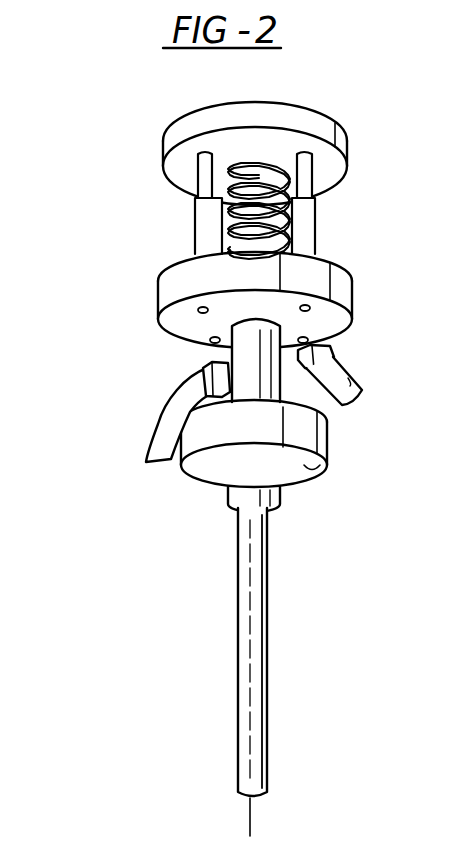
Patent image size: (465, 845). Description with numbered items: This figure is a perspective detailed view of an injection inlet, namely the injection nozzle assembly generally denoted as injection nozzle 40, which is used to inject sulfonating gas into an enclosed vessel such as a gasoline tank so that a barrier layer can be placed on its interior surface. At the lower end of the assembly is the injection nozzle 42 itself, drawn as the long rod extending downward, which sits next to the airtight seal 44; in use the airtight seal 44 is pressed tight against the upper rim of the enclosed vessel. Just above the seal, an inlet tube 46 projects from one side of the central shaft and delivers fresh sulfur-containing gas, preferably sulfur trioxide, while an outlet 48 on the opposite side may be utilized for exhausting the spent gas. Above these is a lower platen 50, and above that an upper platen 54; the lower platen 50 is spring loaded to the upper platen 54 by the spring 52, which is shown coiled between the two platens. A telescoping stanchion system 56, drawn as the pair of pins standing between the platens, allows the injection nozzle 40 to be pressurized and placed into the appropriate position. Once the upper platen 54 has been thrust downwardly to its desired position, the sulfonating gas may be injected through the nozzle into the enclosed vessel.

The injection nozzle 40 is at (143, 343).
The injection nozzle 42 is at (253, 645).
The airtight seal 44 is at (322, 480).
The inlet tube 46 is at (165, 424).
The outlet 48 is at (352, 372).
The lower platen 50 is at (352, 263).
The spring 52 is at (266, 158).
The upper platen 54 is at (207, 128).
The telescoping stanchion system 56 is at (315, 203).